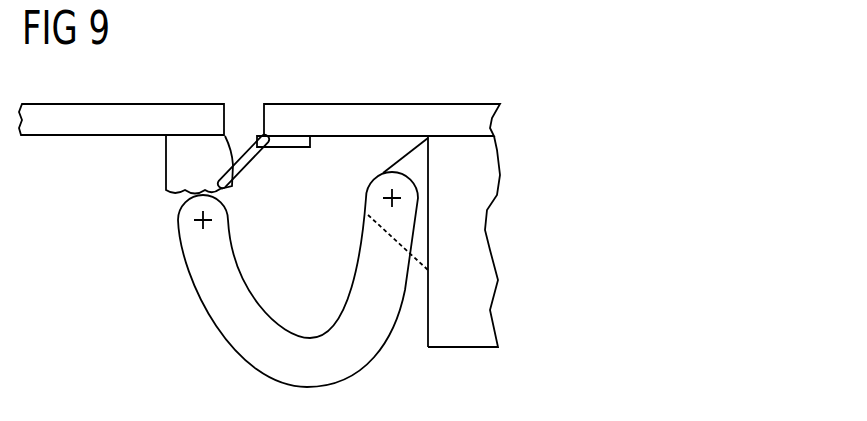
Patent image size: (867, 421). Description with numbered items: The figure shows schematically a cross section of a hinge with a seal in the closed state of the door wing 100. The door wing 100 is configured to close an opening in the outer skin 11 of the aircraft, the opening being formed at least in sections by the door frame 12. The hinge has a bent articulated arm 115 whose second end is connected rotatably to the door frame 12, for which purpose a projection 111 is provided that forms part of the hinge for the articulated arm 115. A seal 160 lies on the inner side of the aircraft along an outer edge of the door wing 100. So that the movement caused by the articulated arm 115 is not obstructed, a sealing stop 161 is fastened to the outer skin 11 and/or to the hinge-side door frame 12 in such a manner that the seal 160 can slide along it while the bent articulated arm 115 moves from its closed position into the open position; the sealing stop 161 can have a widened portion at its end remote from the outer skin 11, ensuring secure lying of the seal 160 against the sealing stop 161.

The door wing 100 is at (147, 117).
The outer skin 11 is at (381, 120).
The door frame 12 is at (473, 228).
The projection 111 is at (417, 167).
The articulated arm 115 is at (222, 303).
The seal 160 is at (175, 172).
The sealing stop 161 is at (238, 145).